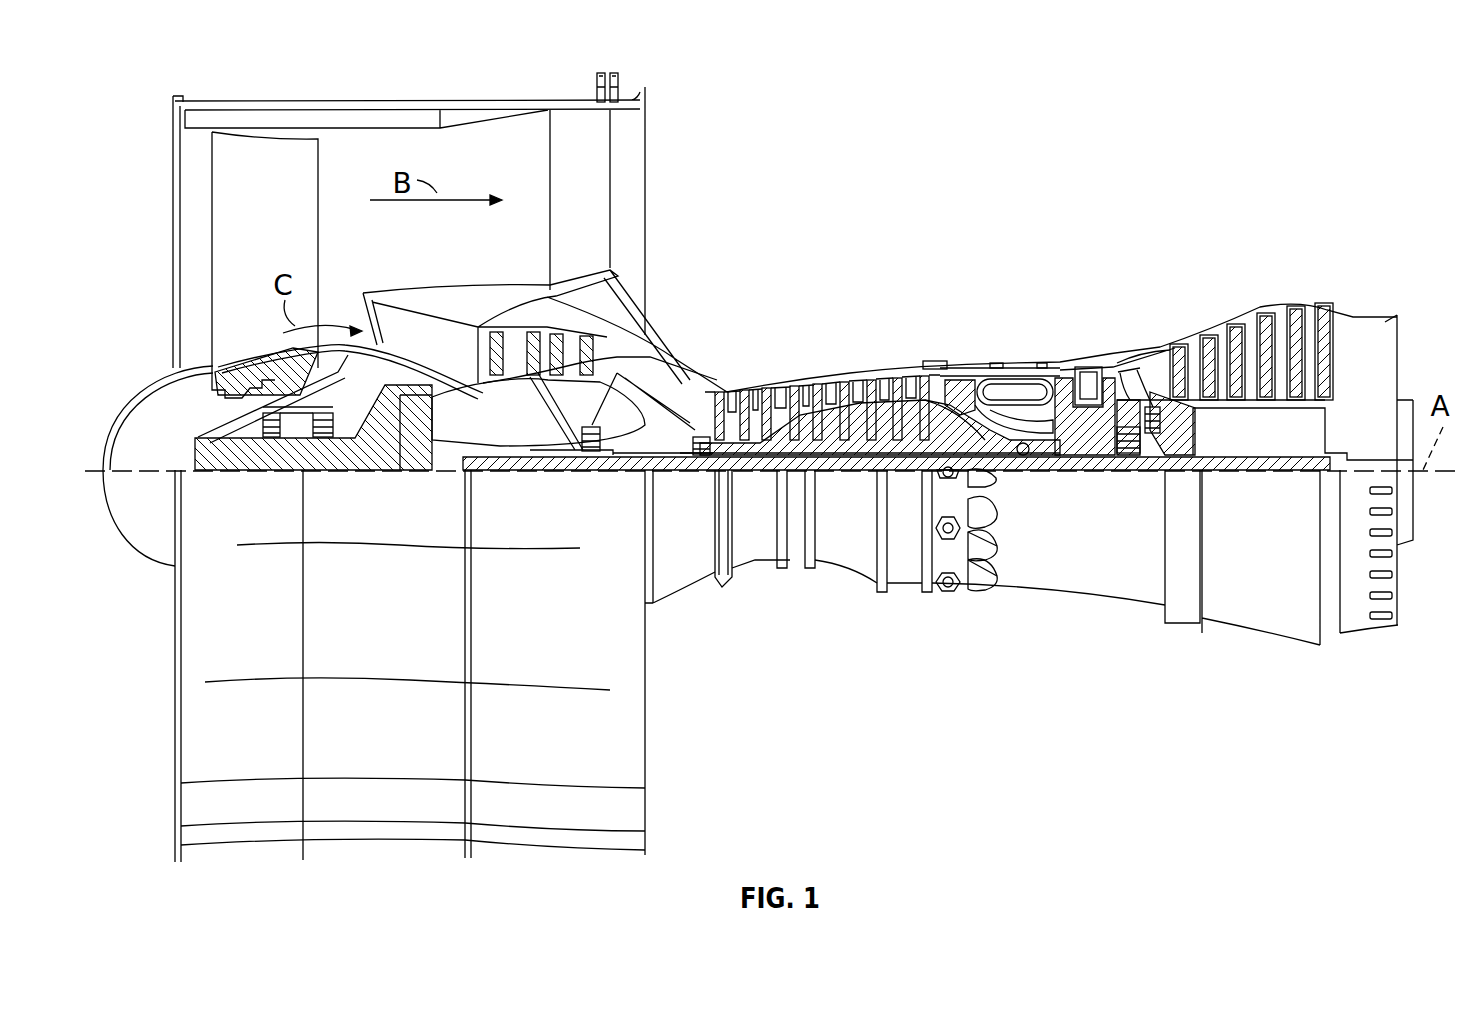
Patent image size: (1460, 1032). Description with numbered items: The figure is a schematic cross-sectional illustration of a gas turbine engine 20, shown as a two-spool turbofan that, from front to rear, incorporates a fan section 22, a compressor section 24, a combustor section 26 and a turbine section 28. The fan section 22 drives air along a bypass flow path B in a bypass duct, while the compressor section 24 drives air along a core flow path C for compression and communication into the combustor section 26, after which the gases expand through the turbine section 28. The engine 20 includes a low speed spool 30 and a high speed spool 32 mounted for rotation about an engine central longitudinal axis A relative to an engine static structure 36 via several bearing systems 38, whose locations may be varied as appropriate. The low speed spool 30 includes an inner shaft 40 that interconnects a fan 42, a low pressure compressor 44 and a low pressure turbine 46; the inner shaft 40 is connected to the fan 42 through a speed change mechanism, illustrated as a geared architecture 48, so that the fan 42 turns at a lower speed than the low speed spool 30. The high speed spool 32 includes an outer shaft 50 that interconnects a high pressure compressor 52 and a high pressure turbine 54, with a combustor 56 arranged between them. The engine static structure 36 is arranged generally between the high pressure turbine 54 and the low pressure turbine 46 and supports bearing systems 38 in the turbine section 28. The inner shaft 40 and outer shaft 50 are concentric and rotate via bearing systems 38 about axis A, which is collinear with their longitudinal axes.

The gas turbine engine 20 is at (1222, 139).
The fan section 22 is at (448, 92).
The compressor section 24 is at (849, 327).
The combustor section 26 is at (1019, 355).
The turbine section 28 is at (1265, 349).
The low speed spool 30 is at (866, 480).
The high speed spool 32 is at (935, 393).
The engine static structure 36 is at (906, 600).
The bearing systems 38 is at (277, 433).
The inner shaft 40 is at (661, 465).
The fan 42 is at (287, 224).
The low pressure compressor 44 is at (565, 350).
The low pressure turbine 46 is at (1252, 328).
The geared architecture 48 is at (413, 437).
The outer shaft 50 is at (1032, 447).
The high pressure compressor 52 is at (822, 348).
The high pressure turbine 54 is at (1088, 367).
The combustor 56 is at (1010, 387).